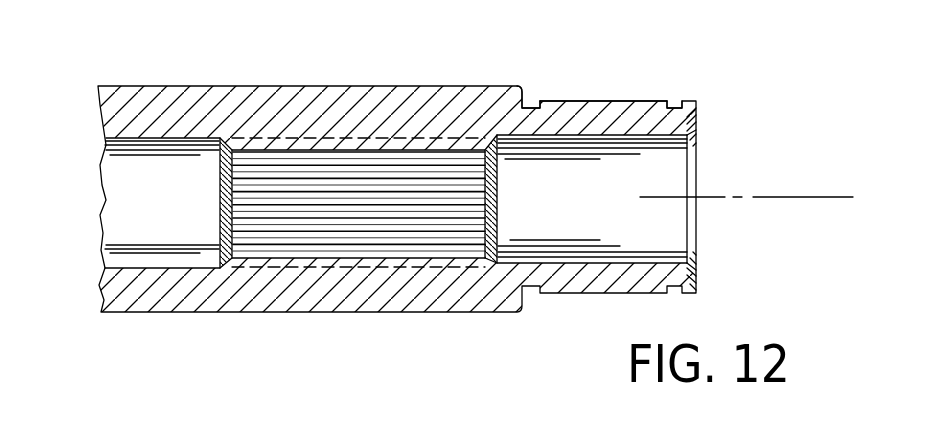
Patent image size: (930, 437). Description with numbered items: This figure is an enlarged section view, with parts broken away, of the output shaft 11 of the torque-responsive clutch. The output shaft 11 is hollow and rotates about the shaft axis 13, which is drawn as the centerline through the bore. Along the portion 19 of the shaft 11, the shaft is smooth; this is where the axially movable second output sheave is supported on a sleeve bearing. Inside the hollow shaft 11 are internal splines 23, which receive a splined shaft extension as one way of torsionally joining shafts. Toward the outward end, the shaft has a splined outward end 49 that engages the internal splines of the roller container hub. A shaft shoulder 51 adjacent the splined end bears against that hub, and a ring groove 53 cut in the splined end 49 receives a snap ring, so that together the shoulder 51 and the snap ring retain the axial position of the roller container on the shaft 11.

The output shaft 11 is at (415, 305).
The shaft axis 13 is at (795, 197).
The portion of the shaft 19 is at (165, 86).
The internal splines 23 is at (310, 162).
The splined outward end 49 is at (582, 102).
The shaft shoulder 51 is at (524, 97).
The ring groove 53 is at (673, 108).